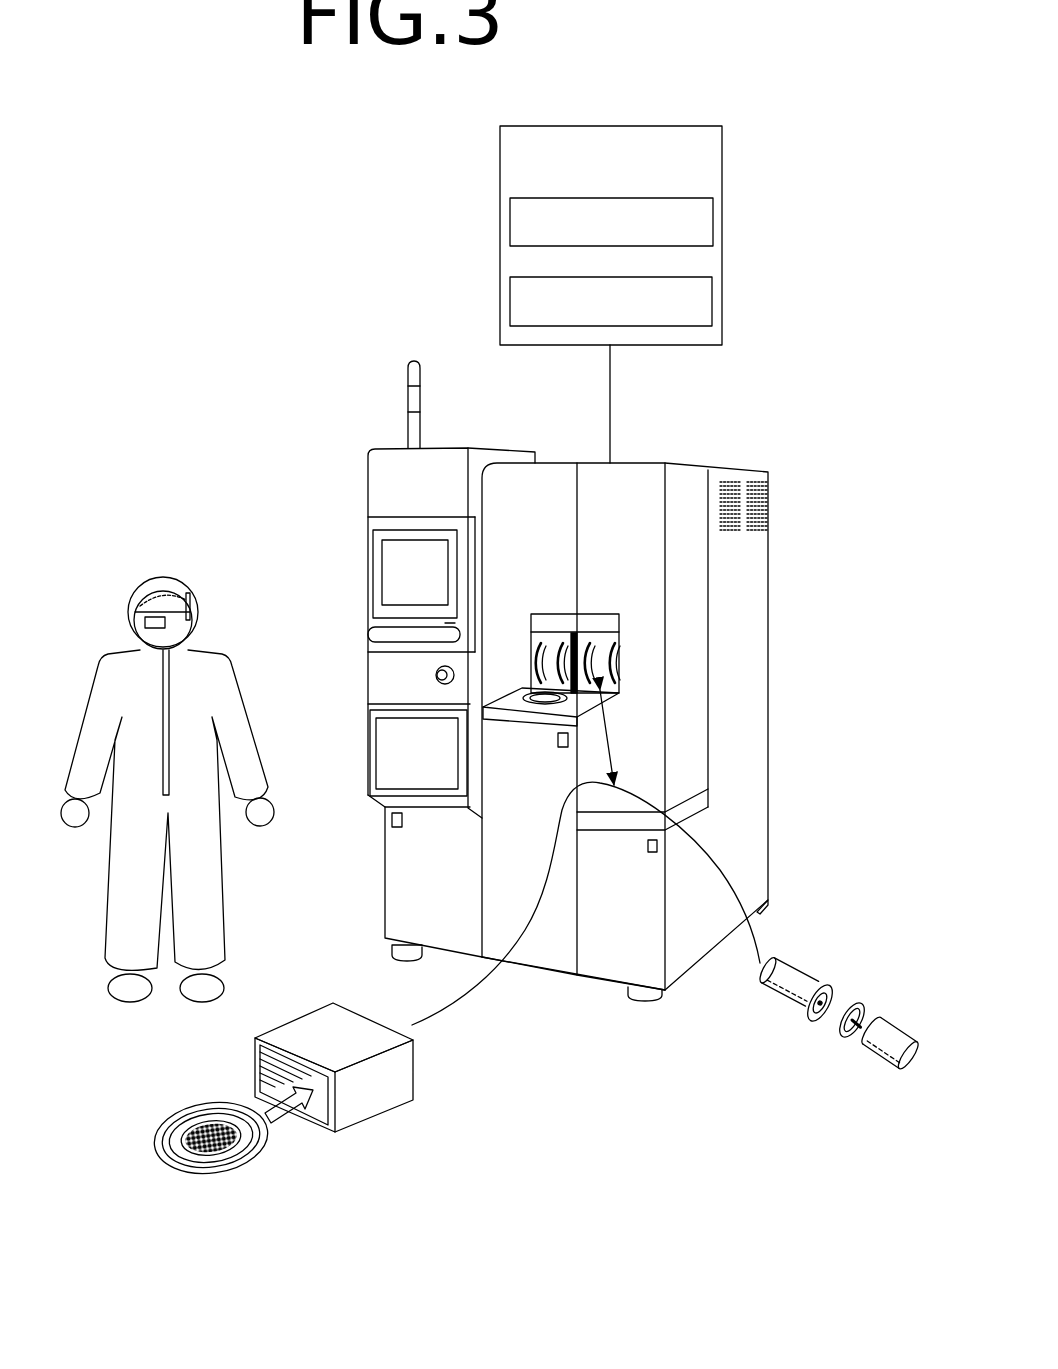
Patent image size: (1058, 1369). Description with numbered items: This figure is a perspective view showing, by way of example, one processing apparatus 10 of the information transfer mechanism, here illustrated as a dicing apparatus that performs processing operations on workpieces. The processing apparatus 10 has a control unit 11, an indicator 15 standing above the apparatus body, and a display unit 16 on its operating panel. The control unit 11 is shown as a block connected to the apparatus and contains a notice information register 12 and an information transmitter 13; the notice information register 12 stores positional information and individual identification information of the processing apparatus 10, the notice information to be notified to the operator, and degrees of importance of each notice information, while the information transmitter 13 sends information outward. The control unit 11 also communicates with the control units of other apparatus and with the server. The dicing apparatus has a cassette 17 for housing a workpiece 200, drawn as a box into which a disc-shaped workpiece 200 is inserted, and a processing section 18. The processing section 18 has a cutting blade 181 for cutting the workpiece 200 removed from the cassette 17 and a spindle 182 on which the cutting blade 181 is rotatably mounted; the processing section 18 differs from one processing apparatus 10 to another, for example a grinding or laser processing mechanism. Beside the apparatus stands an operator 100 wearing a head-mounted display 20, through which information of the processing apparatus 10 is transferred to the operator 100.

The processing apparatus 10 is at (755, 591).
The control unit 11 is at (689, 108).
The notice information register 12 is at (680, 178).
The information transmitter 13 is at (668, 258).
The indicator 15 is at (412, 383).
The display unit 16 is at (393, 568).
The cassette 17 is at (386, 1095).
The processing section 18 is at (821, 1002).
The cutting blade 181 is at (797, 1020).
The spindle 182 is at (770, 997).
The head-mounted display 20 is at (154, 604).
The operator 100 is at (207, 850).
The workpiece 200 is at (239, 1179).